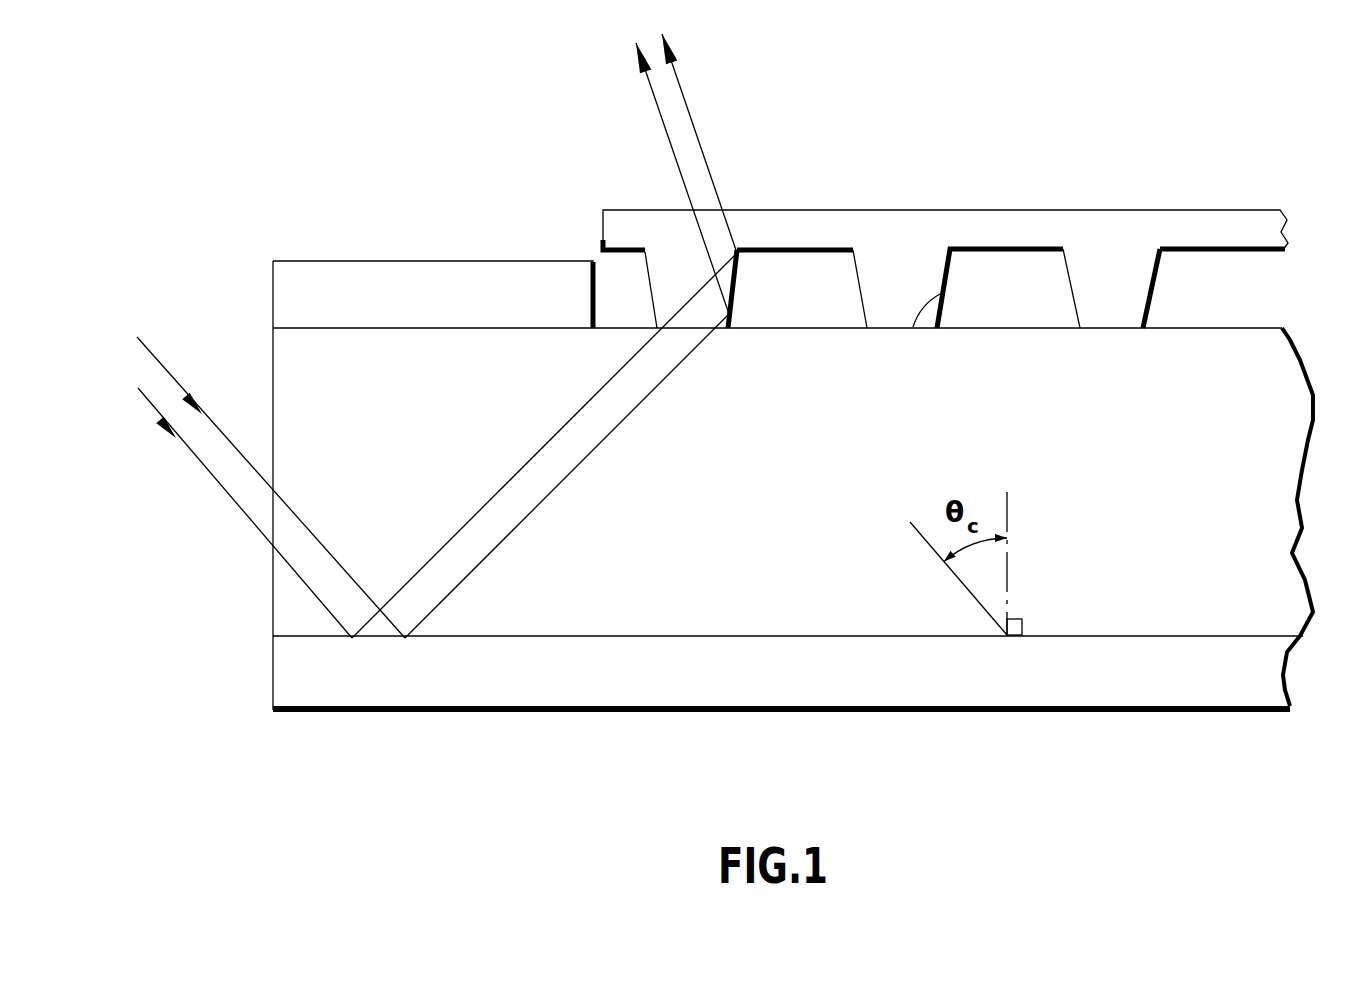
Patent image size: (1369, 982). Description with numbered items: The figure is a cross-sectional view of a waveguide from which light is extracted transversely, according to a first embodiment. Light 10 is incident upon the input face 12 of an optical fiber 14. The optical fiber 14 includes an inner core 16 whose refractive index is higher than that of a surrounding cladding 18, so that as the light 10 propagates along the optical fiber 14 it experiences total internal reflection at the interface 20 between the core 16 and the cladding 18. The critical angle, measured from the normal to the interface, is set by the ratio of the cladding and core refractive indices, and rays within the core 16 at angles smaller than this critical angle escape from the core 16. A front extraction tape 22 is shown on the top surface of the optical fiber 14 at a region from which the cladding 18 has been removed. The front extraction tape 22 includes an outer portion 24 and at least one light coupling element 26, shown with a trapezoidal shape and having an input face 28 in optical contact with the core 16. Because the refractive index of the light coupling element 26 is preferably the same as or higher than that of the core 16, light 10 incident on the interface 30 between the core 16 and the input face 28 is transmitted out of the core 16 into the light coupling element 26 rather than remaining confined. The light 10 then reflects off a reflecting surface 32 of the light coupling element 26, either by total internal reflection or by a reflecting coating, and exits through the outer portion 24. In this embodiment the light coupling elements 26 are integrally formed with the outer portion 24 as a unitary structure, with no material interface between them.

The light 10 is at (143, 395).
The input face 12 is at (273, 391).
The optical fiber 14 is at (423, 262).
The inner core 16 is at (1273, 508).
The cladding 18 is at (273, 674).
The interface 20 is at (320, 636).
The front extraction tape 22 is at (900, 210).
The outer portion 24 is at (1030, 220).
The light coupling element 26 is at (872, 290).
The input face 28 is at (950, 298).
The interface 30 is at (692, 330).
The reflecting surface 32 is at (738, 282).